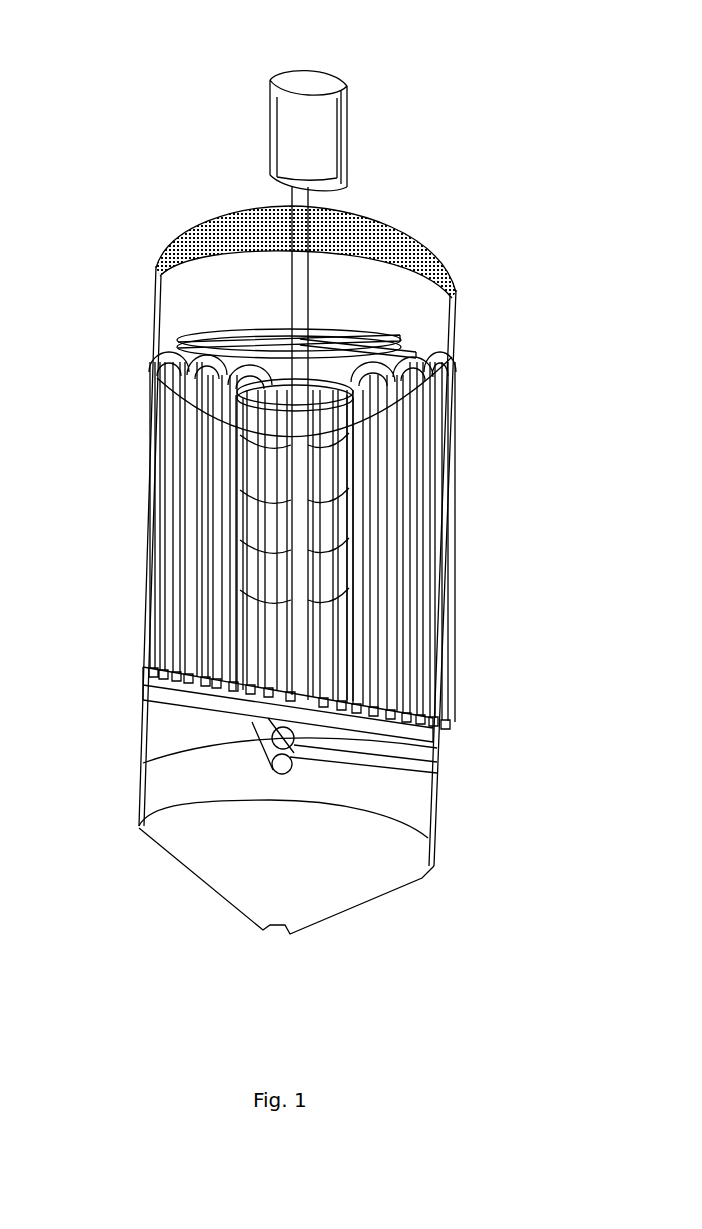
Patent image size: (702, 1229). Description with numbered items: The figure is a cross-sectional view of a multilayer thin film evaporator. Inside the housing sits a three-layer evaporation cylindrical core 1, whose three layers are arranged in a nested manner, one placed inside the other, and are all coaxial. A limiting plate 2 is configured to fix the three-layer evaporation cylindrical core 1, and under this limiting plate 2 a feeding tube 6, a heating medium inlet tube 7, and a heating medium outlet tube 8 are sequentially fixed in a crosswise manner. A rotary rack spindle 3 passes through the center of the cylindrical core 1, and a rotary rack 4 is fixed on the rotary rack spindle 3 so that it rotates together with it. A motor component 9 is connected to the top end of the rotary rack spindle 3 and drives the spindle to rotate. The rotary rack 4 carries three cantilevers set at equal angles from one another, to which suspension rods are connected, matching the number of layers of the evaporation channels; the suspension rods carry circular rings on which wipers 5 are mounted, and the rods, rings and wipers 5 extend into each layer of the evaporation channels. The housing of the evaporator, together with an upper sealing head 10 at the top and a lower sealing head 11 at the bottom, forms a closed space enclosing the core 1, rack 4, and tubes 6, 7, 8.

The three-layer evaporation cylindrical core 1 is at (410, 400).
The limiting plate 2 is at (437, 683).
The rotary rack spindle 3 is at (287, 640).
The rotary rack 4 is at (187, 333).
The wipers 5 is at (160, 398).
The feeding tube 6 is at (143, 670).
The heating medium inlet tube 7 is at (310, 738).
The heating medium outlet tube 8 is at (274, 762).
The motor component 9 is at (337, 93).
The upper sealing head 10 is at (365, 230).
The lower sealing head 11 is at (367, 900).